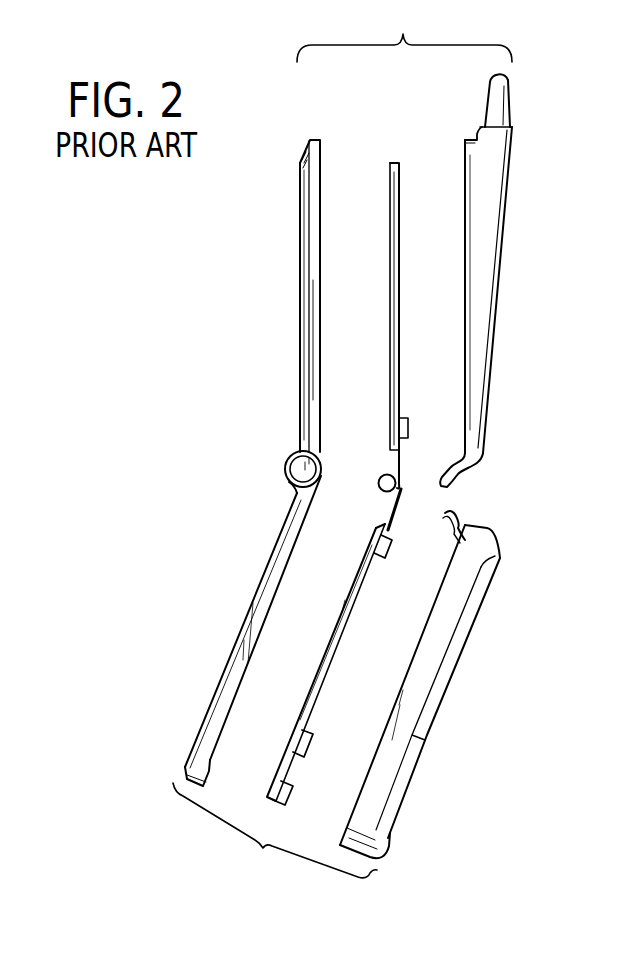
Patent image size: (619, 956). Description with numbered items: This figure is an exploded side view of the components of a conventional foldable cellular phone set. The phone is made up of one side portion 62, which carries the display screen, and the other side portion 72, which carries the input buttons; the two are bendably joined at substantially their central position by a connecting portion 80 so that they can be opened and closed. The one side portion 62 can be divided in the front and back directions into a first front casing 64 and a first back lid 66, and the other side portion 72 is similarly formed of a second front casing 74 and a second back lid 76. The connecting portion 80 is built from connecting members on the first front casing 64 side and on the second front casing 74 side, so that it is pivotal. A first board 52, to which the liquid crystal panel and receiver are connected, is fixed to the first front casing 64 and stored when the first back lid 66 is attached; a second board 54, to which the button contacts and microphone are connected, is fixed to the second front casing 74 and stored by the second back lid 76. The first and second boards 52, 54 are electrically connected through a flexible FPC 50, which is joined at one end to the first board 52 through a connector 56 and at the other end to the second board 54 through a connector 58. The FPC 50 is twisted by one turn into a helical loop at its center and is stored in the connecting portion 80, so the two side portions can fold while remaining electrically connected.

The FPC 50 is at (398, 467).
The first board 52 is at (399, 305).
The second board 54 is at (320, 684).
The connector 56 is at (408, 428).
The connector 58 is at (390, 553).
The one side portion 62 is at (404, 31).
The first front casing 64 is at (300, 212).
The first back lid 66 is at (483, 413).
The other side portion 72 is at (275, 831).
The second front casing 74 is at (228, 663).
The second back lid 76 is at (405, 793).
The connecting portion 80 is at (285, 457).